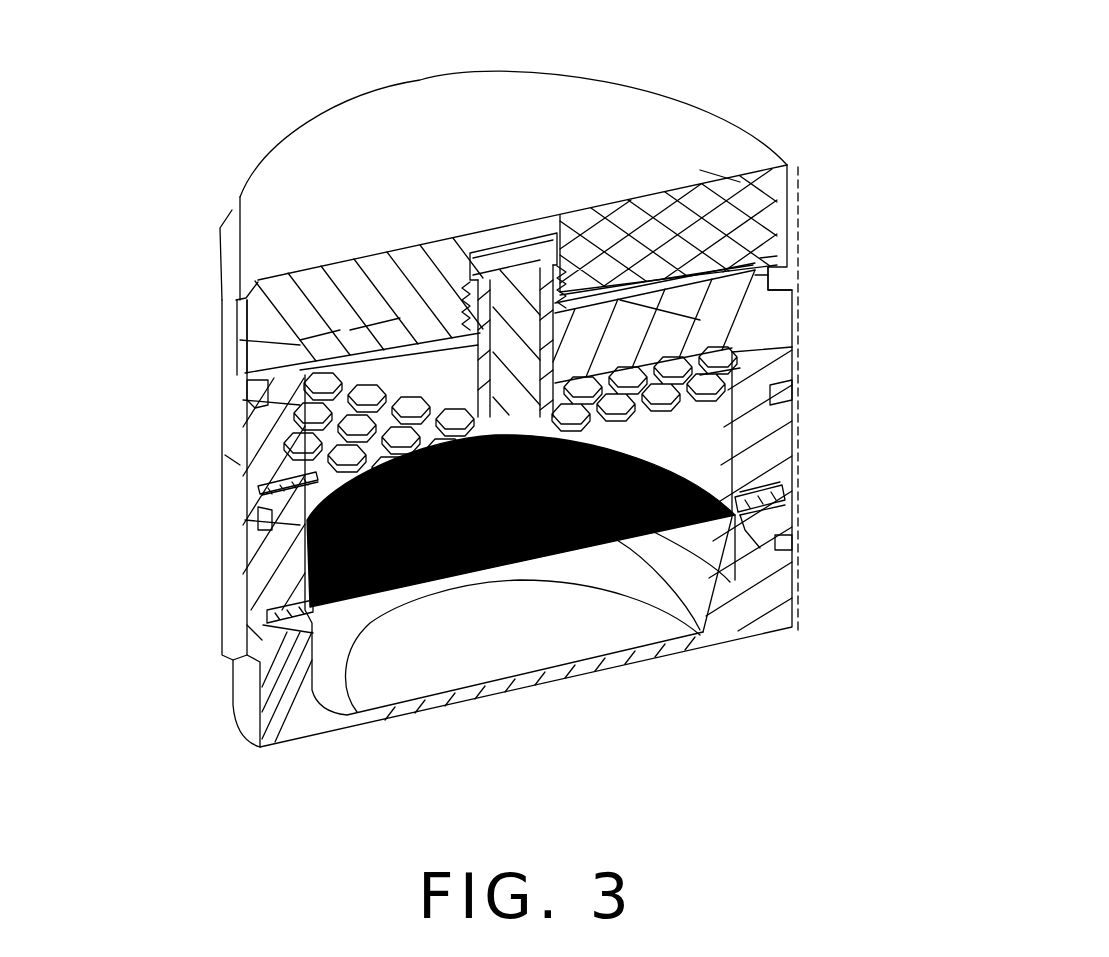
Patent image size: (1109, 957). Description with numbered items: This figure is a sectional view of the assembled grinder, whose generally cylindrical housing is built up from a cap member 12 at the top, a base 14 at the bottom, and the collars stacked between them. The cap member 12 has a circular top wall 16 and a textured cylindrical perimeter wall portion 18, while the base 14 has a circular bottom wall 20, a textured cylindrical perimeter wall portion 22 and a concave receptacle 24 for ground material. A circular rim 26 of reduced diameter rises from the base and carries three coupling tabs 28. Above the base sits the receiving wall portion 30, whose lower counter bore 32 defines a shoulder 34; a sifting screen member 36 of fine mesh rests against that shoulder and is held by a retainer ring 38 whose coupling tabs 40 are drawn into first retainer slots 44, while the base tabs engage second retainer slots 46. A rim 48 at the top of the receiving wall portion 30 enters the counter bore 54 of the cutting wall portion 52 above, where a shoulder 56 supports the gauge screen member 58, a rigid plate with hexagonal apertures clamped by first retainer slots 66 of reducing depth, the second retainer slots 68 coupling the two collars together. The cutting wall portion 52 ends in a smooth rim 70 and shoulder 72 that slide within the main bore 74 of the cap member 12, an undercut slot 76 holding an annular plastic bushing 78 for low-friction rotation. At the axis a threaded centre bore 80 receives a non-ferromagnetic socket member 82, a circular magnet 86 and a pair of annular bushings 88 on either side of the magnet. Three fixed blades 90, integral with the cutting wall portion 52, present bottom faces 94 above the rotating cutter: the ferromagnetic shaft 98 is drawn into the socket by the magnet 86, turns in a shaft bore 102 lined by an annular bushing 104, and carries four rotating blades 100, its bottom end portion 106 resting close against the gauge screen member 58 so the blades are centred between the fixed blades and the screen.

The cap member 12 is at (140, 268).
The base 14 is at (170, 738).
The circular top wall 16 is at (596, 96).
The cylindrical perimeter wall portion 18 is at (240, 343).
The circular bottom wall 20 is at (500, 697).
The cylindrical perimeter wall portion 22 is at (268, 688).
The receptacle 24 is at (552, 647).
The circular rim 26 is at (268, 642).
The coupling tabs 28 is at (785, 525).
The receiving wall portion 30 is at (225, 578).
The counter bore 32 is at (270, 621).
The shoulder 34 is at (270, 610).
The sifting screen member 36 is at (627, 533).
The retainer ring 38 is at (743, 520).
The coupling tabs 40 is at (780, 507).
The first retainer slots 44 is at (793, 490).
The second retainer slots 46 is at (790, 545).
The rim 48 is at (275, 525).
The cutting wall portion 52 is at (225, 460).
The counter bore 54 is at (793, 397).
The shoulder 56 is at (707, 380).
The gauge screen member 58 is at (743, 383).
The first retainer slots 66 is at (252, 490).
The second retainer slots 68 is at (258, 518).
The rim 70 is at (250, 405).
The shoulder 72 is at (787, 262).
The main bore 74 is at (780, 262).
The undercut slot 76 is at (785, 255).
The annular plastic bushing 78 is at (247, 376).
The centre bore 80 is at (613, 197).
The socket member 82 is at (713, 173).
The circular magnet 86 is at (515, 228).
The annular bushings 88 is at (460, 240).
The fixed blades 90 is at (657, 330).
The bottom faces 94 is at (633, 373).
The shaft 98 is at (385, 320).
The rotating blades 100 is at (340, 318).
The shaft bore 102 is at (773, 263).
The annular bushing 104 is at (377, 297).
The bottom end portion 106 is at (545, 434).